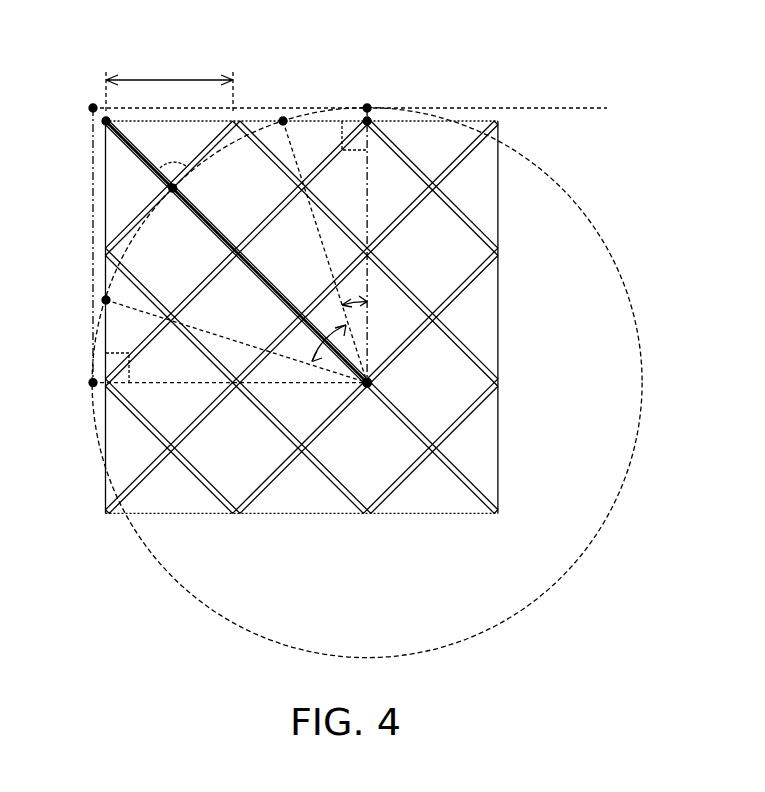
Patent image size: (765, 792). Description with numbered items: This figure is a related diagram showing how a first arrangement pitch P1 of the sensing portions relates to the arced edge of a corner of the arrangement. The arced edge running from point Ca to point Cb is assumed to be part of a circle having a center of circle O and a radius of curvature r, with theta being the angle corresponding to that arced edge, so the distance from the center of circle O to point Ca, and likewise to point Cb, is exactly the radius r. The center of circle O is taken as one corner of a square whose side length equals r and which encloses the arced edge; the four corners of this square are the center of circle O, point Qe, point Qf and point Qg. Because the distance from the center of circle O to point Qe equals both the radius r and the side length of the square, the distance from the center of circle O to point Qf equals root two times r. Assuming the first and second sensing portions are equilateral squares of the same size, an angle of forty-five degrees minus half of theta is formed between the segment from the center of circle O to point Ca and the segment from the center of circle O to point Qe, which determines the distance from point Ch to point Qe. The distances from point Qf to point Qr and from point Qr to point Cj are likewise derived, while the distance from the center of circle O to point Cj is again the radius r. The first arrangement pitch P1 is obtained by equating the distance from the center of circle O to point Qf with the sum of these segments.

The first arrangement pitch P1 is at (169, 86).
The point Qf is at (77, 97).
The point Qr is at (115, 143).
The point Qe is at (365, 95).
The point Qg is at (76, 386).
The point Ca is at (277, 103).
The point Cb is at (88, 296).
The point Cj is at (187, 186).
The point Ch is at (378, 142).
The center of circle O is at (365, 399).
The radius of curvature r is at (282, 290).